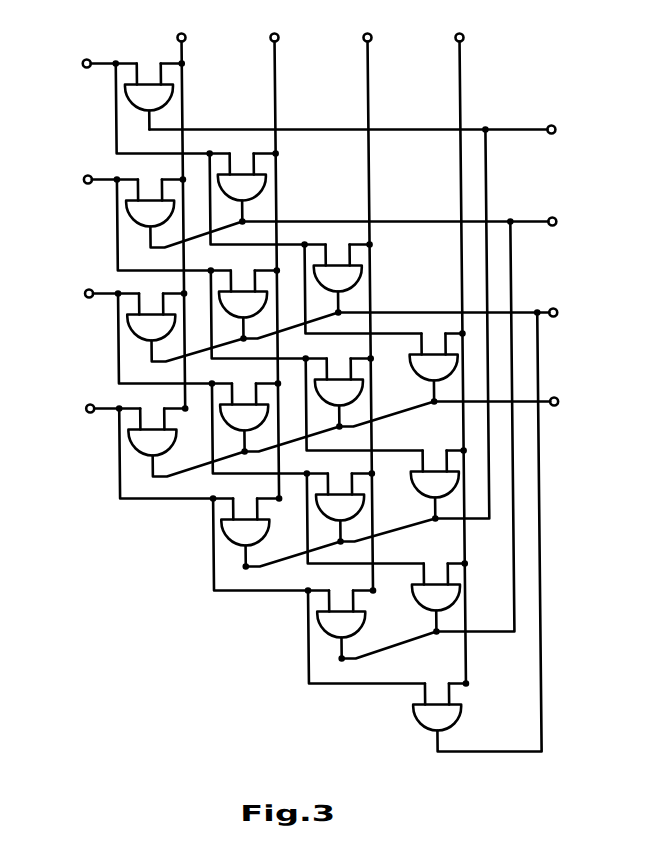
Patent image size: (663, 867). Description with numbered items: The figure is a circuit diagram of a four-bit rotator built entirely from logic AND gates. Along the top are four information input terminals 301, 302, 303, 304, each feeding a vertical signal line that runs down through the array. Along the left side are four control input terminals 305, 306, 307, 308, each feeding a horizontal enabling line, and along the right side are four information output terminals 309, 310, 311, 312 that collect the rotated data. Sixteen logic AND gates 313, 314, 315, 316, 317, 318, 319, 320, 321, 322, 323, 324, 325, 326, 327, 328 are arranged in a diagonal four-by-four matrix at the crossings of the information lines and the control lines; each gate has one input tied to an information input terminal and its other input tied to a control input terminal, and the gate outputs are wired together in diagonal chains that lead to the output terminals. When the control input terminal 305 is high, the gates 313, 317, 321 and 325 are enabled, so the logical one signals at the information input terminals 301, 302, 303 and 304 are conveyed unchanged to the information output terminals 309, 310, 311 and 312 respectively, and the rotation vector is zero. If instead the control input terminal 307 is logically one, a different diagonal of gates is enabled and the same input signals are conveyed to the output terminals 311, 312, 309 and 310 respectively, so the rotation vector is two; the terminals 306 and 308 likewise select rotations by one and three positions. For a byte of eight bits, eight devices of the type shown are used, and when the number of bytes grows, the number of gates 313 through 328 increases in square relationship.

The information input terminal 301 is at (204, 26).
The information input terminal 302 is at (297, 26).
The information input terminal 303 is at (390, 26).
The information input terminal 304 is at (482, 26).
The control input terminal 305 is at (86, 68).
The control input terminal 306 is at (86, 184).
The control input terminal 307 is at (86, 298).
The control input terminal 308 is at (86, 413).
The information output terminal 309 is at (580, 142).
The information output terminal 310 is at (580, 234).
The information output terminal 311 is at (580, 325).
The information output terminal 312 is at (580, 414).
The logic AND gate 313 is at (150, 96).
The logic AND gate 314 is at (150, 212).
The logic AND gate 315 is at (150, 326).
The logic AND gate 316 is at (150, 441).
The logic AND gate 317 is at (242, 186).
The logic AND gate 318 is at (242, 303).
The logic AND gate 319 is at (242, 416).
The logic AND gate 320 is at (242, 531).
The logic AND gate 321 is at (337, 277).
The logic AND gate 322 is at (337, 391).
The logic AND gate 323 is at (337, 506).
The logic AND gate 324 is at (337, 623).
The logic AND gate 325 is at (432, 366).
The logic AND gate 326 is at (432, 483).
The logic AND gate 327 is at (432, 596).
The logic AND gate 328 is at (432, 716).